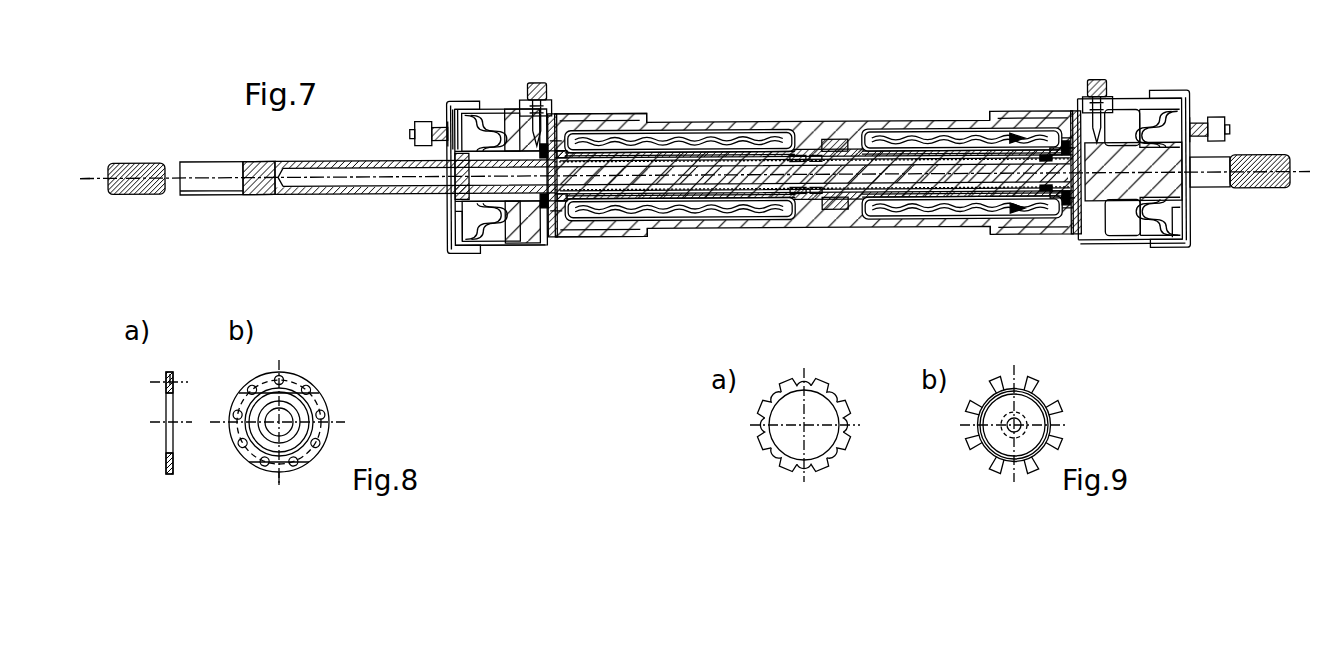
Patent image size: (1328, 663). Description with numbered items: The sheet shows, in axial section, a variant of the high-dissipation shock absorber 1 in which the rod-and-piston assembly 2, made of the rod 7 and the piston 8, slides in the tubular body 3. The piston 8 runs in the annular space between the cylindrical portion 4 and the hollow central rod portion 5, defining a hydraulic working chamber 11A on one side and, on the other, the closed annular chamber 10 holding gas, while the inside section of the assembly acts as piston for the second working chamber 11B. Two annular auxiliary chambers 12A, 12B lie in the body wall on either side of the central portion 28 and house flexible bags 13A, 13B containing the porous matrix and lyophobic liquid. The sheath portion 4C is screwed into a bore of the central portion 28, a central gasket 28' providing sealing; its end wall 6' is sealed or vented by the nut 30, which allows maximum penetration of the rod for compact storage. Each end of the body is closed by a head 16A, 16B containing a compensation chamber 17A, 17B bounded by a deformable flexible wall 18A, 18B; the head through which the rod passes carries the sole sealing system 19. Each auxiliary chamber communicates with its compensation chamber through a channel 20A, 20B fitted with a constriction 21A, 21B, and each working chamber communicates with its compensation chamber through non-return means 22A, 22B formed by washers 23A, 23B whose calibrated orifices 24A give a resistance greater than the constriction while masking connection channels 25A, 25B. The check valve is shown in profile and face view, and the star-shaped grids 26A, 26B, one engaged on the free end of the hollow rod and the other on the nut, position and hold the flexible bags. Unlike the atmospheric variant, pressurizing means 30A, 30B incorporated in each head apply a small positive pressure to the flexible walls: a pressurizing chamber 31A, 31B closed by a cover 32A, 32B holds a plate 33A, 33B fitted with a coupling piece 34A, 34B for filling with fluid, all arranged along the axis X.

In FIG. 7, the shock absorber 1 is at (420, 100).
In FIG. 7, the rod-and-piston assembly 2 is at (222, 198).
In FIG. 7, the tubular body 3 is at (632, 110).
In FIG. 7, the cylindrical portion 4 is at (752, 118).
In FIG. 7, the sheath portion 4C is at (927, 122).
In FIG. 7, the hollow central rod portion 5 is at (888, 220).
In FIG. 7, the end wall 6' is at (1021, 218).
In FIG. 7, the rod 7 is at (345, 192).
In FIG. 7, the piston 8 is at (802, 222).
In FIG. 7, the closed annular chamber 10 is at (940, 200).
In FIG. 7, the working chamber 11A is at (575, 222).
In FIG. 7, the working chamber 11B is at (1065, 205).
In FIG. 7, the auxiliary chamber 12A is at (660, 215).
In FIG. 7, the auxiliary chamber 12B is at (865, 218).
In FIG. 7, the flexible bag 13A is at (705, 213).
In FIG. 7, the flexible bag 13B is at (975, 212).
In FIG. 7, the head 16A is at (482, 110).
In FIG. 7, the head 16B is at (1150, 105).
In FIG. 7, the compensation chamber 17A is at (510, 225).
In FIG. 7, the compensation chamber 17B is at (1160, 215).
In FIG. 7, the deformable flexible wall 18A is at (505, 115).
In FIG. 7, the deformable flexible wall 18B is at (1118, 110).
In FIG. 7, the sealing system 19 is at (448, 204).
In FIG. 7, the channel 20A is at (554, 109).
In FIG. 7, the channel 20B is at (1085, 118).
In FIG. 7, the constriction 21A is at (546, 83).
In FIG. 7, the constriction 21B is at (1097, 82).
In FIG. 7, the non-return means 22A is at (557, 118).
In FIG. 8, the non-return means 22A is at (266, 477).
In FIG. 7, the non-return means 22B is at (1073, 118).
In FIG. 7, the washer 23A is at (553, 225).
In FIG. 8, the washer 23A is at (165, 468).
In FIG. 7, the washer 23B is at (1090, 215).
In FIG. 8, the calibrated orifices 24A is at (173, 392).
In FIG. 7, the connection channels 25A is at (545, 212).
In FIG. 8, the connection channels 25A is at (330, 436).
In FIG. 7, the connection channels 25B is at (1085, 205).
In FIG. 7, the grid 26A is at (640, 140).
In FIG. 9, the grid 26A is at (847, 431).
In FIG. 7, the grid 26B is at (928, 148).
In FIG. 9, the grid 26B is at (1050, 420).
In FIG. 7, the central portion 28 is at (846, 206).
In FIG. 7, the central gasket 28' is at (810, 224).
In FIG. 7, the nut 30 is at (1048, 222).
In FIG. 7, the pressurizing means 30A is at (418, 114).
In FIG. 7, the pressurizing means 30B is at (1226, 116).
In FIG. 7, the pressurizing chamber 31A is at (452, 118).
In FIG. 7, the pressurizing chamber 31B is at (1190, 240).
In FIG. 7, the cover 32A is at (452, 240).
In FIG. 7, the cover 32B is at (1175, 246).
In FIG. 7, the plate 33A is at (455, 215).
In FIG. 7, the plate 33B is at (1186, 205).
In FIG. 7, the coupling piece 34A is at (413, 132).
In FIG. 7, the coupling piece 34B is at (1235, 132).
In FIG. 7, the axis X is at (88, 187).